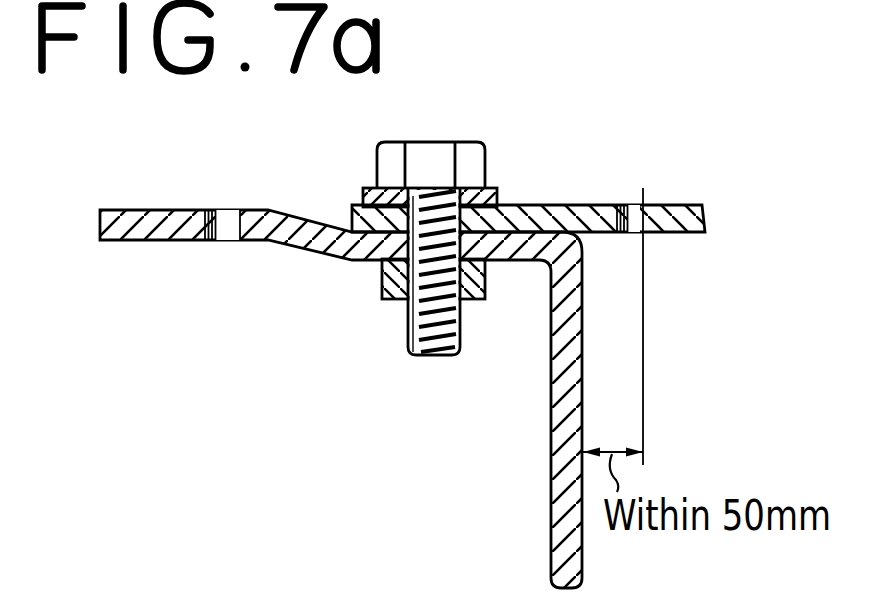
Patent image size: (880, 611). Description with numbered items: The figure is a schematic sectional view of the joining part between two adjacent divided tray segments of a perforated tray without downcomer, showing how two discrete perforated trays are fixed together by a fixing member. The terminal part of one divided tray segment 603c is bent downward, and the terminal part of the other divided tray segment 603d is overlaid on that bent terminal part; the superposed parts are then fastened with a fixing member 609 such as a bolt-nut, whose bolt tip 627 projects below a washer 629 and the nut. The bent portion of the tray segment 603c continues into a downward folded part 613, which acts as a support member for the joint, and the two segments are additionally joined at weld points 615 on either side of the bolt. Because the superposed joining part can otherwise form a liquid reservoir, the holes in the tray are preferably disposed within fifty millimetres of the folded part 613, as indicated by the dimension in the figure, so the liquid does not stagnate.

The first mounting plate portion 603c is at (161, 234).
The second mounting plate portion 603d is at (683, 222).
The bolt fastener 609 is at (380, 310).
The vertical flange 613 is at (552, 566).
The weld 615 is at (228, 214).
The bolt tip 627 is at (435, 390).
The washer 629 is at (497, 188).